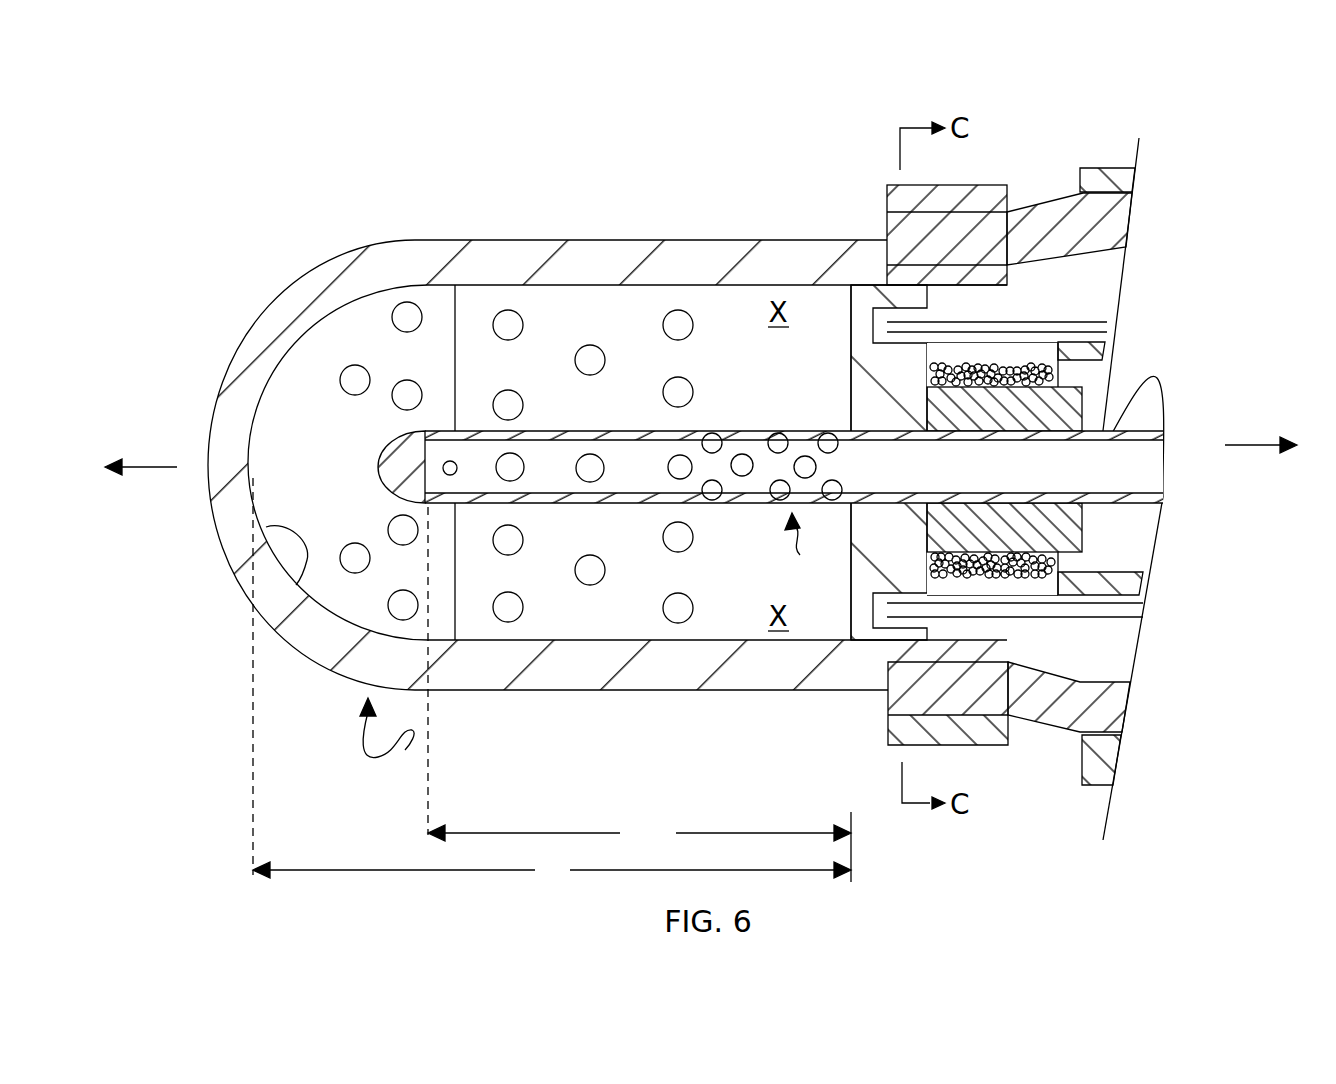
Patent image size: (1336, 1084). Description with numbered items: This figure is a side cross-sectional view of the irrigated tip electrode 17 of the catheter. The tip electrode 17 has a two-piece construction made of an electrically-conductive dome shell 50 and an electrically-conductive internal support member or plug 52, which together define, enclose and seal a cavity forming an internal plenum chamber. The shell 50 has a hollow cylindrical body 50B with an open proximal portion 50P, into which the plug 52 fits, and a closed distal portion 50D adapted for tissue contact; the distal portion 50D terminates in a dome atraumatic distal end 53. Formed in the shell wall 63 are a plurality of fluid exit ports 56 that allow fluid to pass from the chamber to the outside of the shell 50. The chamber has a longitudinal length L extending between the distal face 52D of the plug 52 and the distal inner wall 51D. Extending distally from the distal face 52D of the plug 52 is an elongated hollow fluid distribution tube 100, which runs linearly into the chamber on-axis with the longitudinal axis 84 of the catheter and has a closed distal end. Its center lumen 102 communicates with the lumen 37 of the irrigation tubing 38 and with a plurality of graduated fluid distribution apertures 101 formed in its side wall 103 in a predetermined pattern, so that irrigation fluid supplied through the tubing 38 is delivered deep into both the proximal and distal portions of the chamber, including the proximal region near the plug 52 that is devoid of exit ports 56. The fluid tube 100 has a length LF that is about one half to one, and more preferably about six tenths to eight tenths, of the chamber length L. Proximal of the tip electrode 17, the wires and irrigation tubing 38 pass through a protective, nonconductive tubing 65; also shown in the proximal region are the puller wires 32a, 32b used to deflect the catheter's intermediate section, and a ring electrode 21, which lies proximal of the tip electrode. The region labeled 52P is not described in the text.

The dome shell 50 is at (575, 476).
The closed distal portion 50D is at (282, 297).
The hollow cylindrical body 50B is at (413, 258).
The open proximal portion 50P is at (983, 266).
The distal inner wall 51D is at (267, 617).
The dome atraumatic distal end 53 is at (210, 513).
The fluid exit ports 56 is at (665, 315).
The shell wall 63 is at (635, 690).
The plug 52 is at (858, 471).
The distal face of the plug 52D is at (851, 300).
The packing material 52P is at (922, 354).
The ring electrodes 21 is at (1095, 167).
The puller wire 32a is at (1050, 321).
The puller wire 32b is at (1097, 612).
The lumen of the irrigation tubing 37 is at (813, 475).
The irrigation tubing 38 is at (1108, 503).
The protective nonconductive tubing 65 is at (1113, 583).
The longitudinal axis 84 is at (165, 463).
The tip electrode 17 is at (392, 747).
The fluid distribution tube 100 is at (799, 554).
The fluid distribution apertures 101 is at (723, 394).
The center lumen 102 is at (773, 460).
The side wall 103 is at (712, 500).
The length of the fluid tube LF is at (639, 678).
The longitudinal length of the chamber L is at (552, 682).